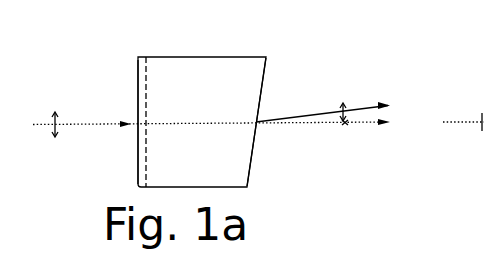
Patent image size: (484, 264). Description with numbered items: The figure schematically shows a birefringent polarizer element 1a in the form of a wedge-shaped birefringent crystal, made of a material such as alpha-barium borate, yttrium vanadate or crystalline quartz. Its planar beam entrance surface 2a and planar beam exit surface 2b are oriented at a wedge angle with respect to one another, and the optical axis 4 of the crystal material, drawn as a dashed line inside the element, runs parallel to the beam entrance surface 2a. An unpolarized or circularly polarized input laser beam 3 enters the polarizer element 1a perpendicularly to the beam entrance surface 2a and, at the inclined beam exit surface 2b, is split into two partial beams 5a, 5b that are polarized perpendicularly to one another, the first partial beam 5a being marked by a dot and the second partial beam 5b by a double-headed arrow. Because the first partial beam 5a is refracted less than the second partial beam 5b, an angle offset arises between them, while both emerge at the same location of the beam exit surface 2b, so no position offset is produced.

The birefringent polarizer element 1a is at (125, 66).
The beam entrance surface 2a is at (134, 107).
The beam exit surface 2b is at (252, 154).
The input laser beam 3 is at (96, 127).
The optical axis 4 is at (149, 92).
The first partial beam 5a is at (321, 126).
The second partial beam 5b is at (318, 110).